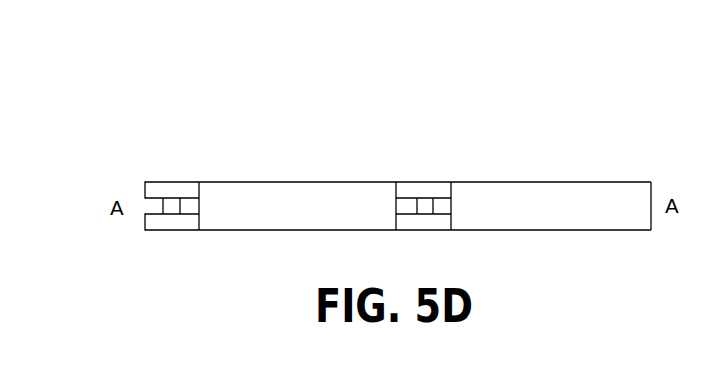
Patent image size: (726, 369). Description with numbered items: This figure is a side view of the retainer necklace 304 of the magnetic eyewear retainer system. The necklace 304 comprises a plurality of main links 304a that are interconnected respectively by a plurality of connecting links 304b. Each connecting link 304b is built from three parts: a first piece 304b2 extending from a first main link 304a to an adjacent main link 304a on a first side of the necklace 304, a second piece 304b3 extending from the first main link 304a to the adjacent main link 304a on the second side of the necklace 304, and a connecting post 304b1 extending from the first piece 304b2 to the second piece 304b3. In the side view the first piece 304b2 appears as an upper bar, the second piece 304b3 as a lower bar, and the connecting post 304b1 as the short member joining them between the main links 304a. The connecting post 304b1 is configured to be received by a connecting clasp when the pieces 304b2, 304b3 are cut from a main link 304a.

The retainer necklace 304 is at (439, 34).
The main link 304a is at (296, 124).
The connecting link 304b is at (186, 124).
The connecting post 304b1 is at (170, 207).
The first piece 304b2 is at (177, 188).
The second piece 304b3 is at (170, 218).